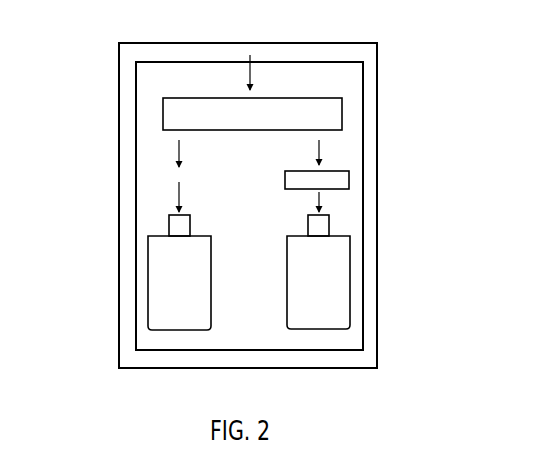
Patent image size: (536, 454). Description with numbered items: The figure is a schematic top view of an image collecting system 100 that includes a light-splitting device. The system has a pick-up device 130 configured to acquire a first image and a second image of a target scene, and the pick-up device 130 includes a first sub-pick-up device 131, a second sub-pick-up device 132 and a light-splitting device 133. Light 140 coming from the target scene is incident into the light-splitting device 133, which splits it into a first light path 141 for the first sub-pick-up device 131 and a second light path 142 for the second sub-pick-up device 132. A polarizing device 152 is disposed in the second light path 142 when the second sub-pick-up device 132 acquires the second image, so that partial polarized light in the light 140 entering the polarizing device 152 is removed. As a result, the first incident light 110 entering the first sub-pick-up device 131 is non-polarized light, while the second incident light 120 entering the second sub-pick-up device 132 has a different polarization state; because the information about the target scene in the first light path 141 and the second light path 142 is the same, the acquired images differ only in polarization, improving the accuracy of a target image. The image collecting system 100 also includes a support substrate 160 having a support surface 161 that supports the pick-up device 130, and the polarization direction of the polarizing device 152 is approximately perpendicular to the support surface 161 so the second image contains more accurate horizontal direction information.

The image collecting system 100 is at (268, 32).
The first incident light 110 is at (179, 193).
The second incident light 120 is at (319, 200).
The pick-up device 130 is at (365, 72).
The first sub-pick-up device 131 is at (173, 331).
The second sub-pick-up device 132 is at (318, 330).
The light-splitting device 133 is at (342, 114).
The light 140 is at (250, 78).
The first light path 141 is at (179, 151).
The second light path 142 is at (319, 153).
The polarizing device 152 is at (349, 180).
The support substrate 160 is at (119, 304).
The support surface 161 is at (129, 243).